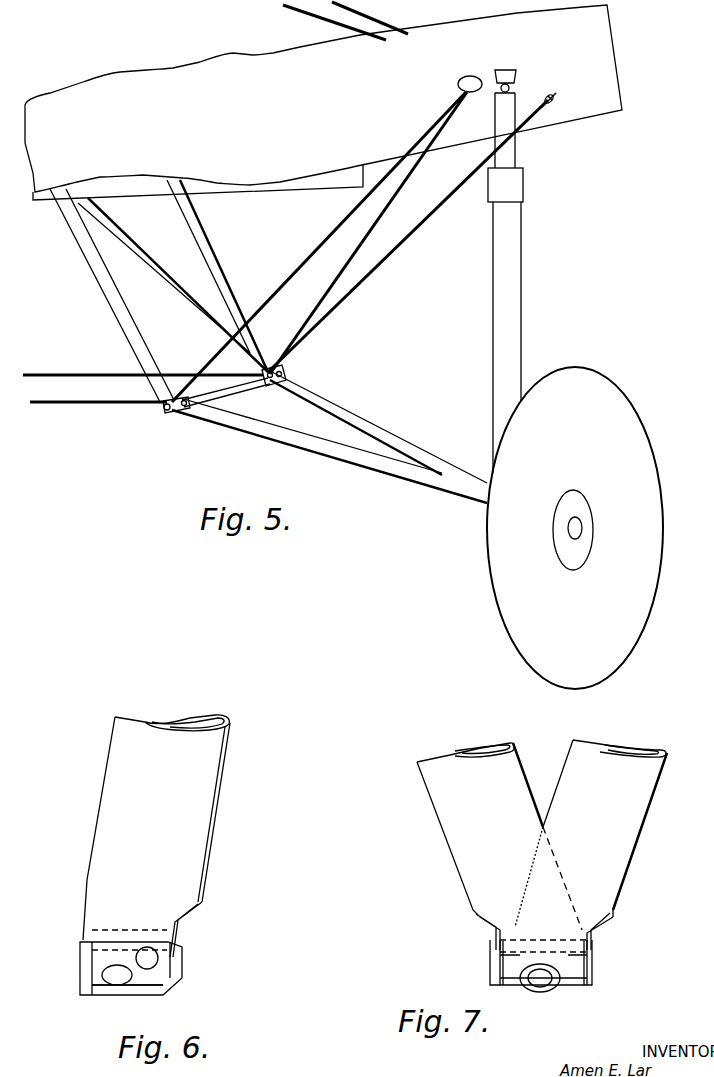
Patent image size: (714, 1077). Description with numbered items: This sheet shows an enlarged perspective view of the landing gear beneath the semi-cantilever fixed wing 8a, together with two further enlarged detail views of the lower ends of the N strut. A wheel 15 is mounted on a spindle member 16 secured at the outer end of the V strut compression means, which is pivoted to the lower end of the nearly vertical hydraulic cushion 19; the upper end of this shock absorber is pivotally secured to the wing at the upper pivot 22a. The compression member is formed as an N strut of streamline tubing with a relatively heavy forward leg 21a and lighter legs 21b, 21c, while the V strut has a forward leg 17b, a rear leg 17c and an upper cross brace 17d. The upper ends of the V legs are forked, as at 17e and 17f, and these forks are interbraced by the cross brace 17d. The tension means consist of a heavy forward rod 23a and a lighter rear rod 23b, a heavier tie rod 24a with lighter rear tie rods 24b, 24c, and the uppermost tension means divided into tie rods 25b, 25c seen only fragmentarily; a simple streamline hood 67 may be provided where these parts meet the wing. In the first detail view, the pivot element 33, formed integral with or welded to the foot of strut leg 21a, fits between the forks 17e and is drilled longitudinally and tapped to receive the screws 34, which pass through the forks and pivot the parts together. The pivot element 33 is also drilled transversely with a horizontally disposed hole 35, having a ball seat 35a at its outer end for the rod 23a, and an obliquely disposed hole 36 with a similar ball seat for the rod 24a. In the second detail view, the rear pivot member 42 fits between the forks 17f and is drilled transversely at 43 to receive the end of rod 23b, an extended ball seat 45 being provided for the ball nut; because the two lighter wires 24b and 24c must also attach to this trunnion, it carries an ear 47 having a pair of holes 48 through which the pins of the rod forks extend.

In FIG. 5, the fixed wing 8a is at (323, 102).
In FIG. 5, the tie rod 25b is at (296, 9).
In FIG. 5, the tie rod 25c is at (340, 22).
In FIG. 5, the streamline hood 67 is at (461, 86).
In FIG. 5, the upper pivot 22a is at (512, 80).
In FIG. 5, the tie rod 24a is at (325, 240).
In FIG. 5, the tie rod 24b is at (402, 185).
In FIG. 5, the tie rod 24c is at (412, 231).
In FIG. 5, the hydraulic cushion 19 is at (516, 298).
In FIG. 5, the wheel 15 is at (575, 528).
In FIG. 5, the spindle member 16 is at (584, 529).
In FIG. 5, the forward leg 21a is at (110, 294).
In FIG. 6, the forward leg 21a is at (156, 827).
In FIG. 5, the leg 21b is at (134, 246).
In FIG. 7, the leg 21b is at (480, 846).
In FIG. 5, the leg 21c is at (208, 246).
In FIG. 7, the leg 21c is at (605, 845).
In FIG. 5, the forward rod 23a is at (80, 404).
In FIG. 5, the rear rod 23b is at (65, 376).
In FIG. 5, the screw 34 is at (160, 409).
In FIG. 5, the fork 17e is at (177, 414).
In FIG. 5, the upper cross brace 17d is at (237, 392).
In FIG. 5, the fork 17f is at (284, 379).
In FIG. 5, the forward leg 17b is at (250, 428).
In FIG. 5, the rear leg 17c is at (343, 410).
In FIG. 6, the obliquely disposed hole 36 is at (178, 947).
In FIG. 6, the pivot element 33 is at (80, 984).
In FIG. 6, the horizontally disposed hole 35 is at (103, 978).
In FIG. 6, the ball seat 35a is at (95, 995).
In FIG. 7, the pivot member 42 is at (595, 978).
In FIG. 7, the ear 47 is at (547, 952).
In FIG. 7, the hole 48 is at (503, 965).
In FIG. 7, the ball seat 45 is at (536, 992).
In FIG. 7, the transverse hole 43 is at (546, 979).